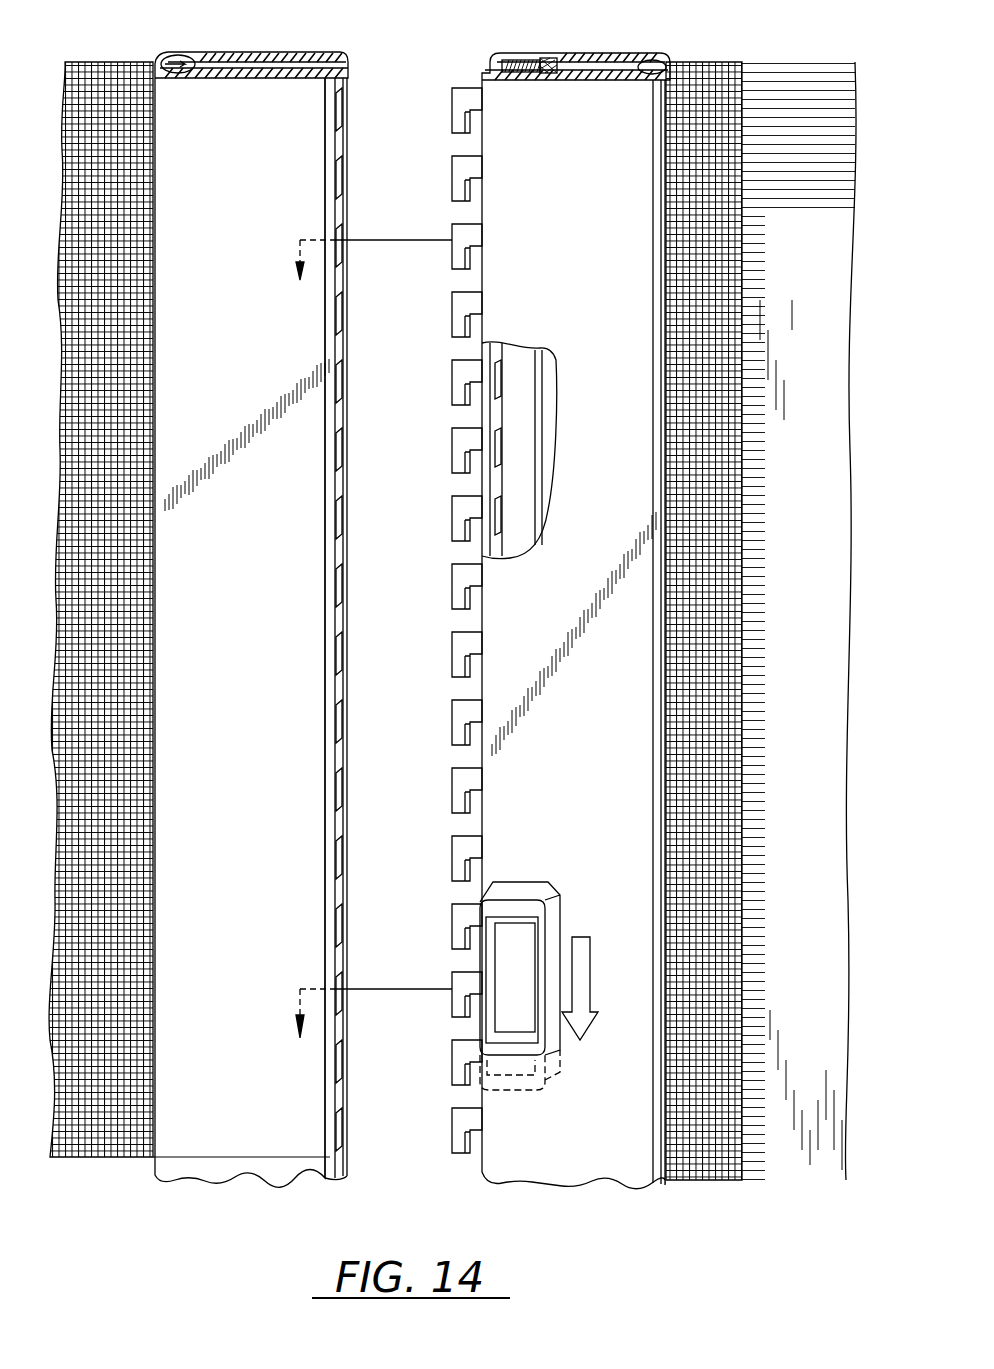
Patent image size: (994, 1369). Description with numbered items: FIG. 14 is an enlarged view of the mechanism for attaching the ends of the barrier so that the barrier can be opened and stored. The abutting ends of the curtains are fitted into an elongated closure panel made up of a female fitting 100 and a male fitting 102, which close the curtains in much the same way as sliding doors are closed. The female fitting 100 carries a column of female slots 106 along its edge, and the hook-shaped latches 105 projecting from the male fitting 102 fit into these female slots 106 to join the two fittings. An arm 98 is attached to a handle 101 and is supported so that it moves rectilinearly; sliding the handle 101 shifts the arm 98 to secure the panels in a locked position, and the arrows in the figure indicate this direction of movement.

The arm 98 is at (515, 373).
The female fitting 100 is at (297, 112).
The handle 101 is at (527, 892).
The male fitting 102 is at (602, 103).
The hooks 105 is at (457, 453).
The female slots 106 is at (338, 580).